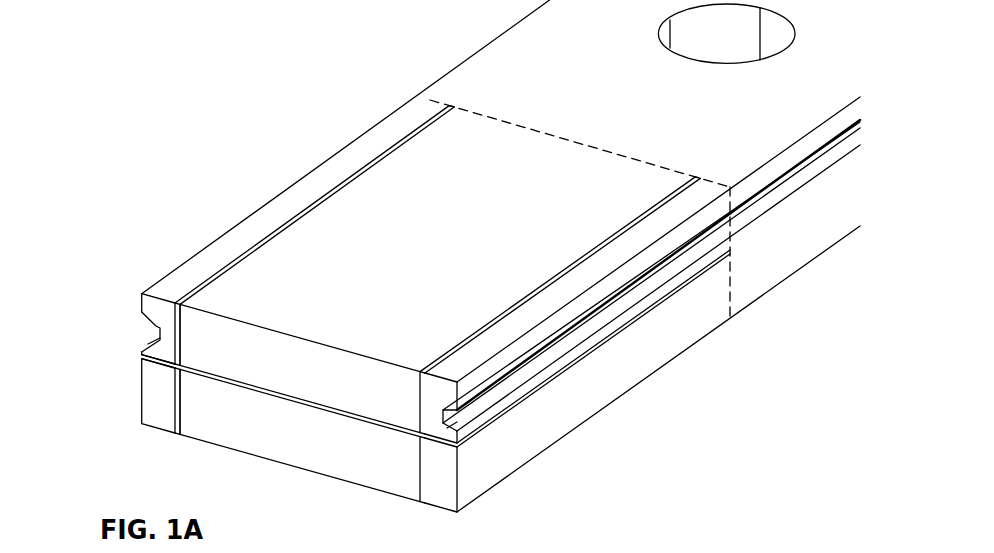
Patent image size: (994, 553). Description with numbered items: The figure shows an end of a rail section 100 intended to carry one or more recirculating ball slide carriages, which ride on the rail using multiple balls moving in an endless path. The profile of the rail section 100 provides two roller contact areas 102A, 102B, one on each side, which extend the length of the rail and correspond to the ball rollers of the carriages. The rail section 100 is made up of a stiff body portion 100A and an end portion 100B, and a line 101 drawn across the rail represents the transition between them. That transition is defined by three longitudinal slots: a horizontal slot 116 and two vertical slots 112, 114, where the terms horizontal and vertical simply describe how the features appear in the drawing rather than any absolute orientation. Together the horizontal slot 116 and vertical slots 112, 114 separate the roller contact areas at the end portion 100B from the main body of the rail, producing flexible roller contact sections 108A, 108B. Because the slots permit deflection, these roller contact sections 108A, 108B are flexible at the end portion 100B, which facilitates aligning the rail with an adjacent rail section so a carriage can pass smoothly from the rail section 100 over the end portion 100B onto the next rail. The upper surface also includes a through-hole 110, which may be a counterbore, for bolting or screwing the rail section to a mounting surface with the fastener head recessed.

The rail section 100 is at (296, 58).
The stiff body portion 100A is at (618, 101).
The end portion 100B is at (443, 274).
The line 101 is at (434, 95).
The roller contact area 102A is at (131, 327).
The roller contact area 102B is at (470, 417).
The roller contact section 108A is at (297, 192).
The roller contact section 108B is at (597, 278).
The through-hole 110 is at (737, 44).
The vertical slot 112 is at (402, 140).
The vertical slot 114 is at (643, 213).
The horizontal slot 116 is at (288, 398).